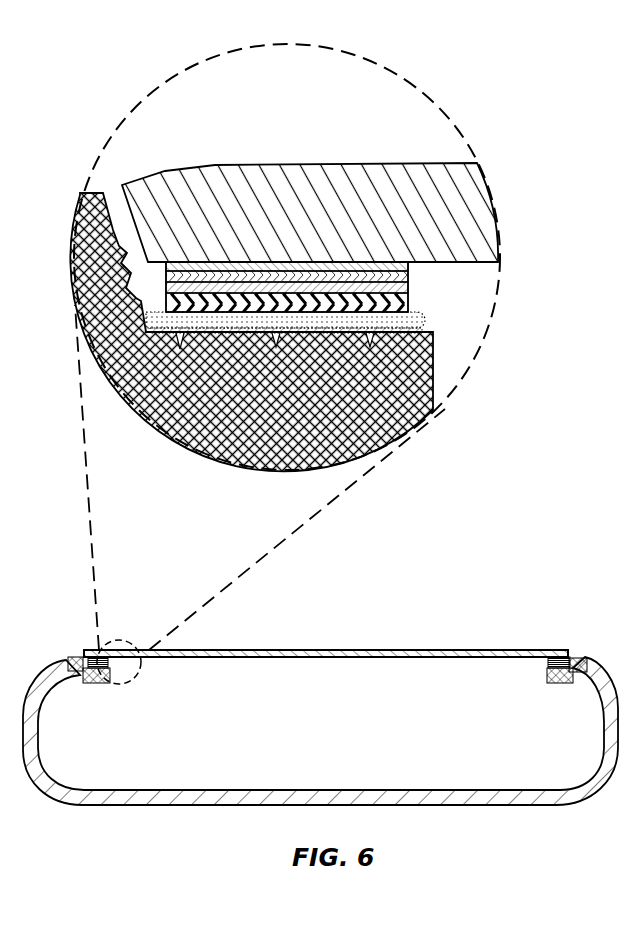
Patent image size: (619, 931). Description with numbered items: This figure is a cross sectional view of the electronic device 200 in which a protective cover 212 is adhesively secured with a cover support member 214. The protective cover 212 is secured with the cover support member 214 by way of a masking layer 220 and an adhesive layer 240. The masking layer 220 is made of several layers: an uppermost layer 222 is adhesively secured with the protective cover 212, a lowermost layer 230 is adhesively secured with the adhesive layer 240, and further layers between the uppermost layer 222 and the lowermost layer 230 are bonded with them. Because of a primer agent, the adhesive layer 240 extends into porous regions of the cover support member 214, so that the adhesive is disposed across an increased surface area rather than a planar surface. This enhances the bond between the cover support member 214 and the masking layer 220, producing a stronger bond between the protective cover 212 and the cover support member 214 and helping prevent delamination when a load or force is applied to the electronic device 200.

The electronic device 200 is at (442, 554).
The protective cover 212 is at (331, 223).
The cover support member 214 is at (293, 403).
The masking layer 220 is at (473, 293).
The uppermost layer 222 is at (408, 264).
The lowermost layer 230 is at (425, 317).
The adhesive layer 240 is at (432, 332).